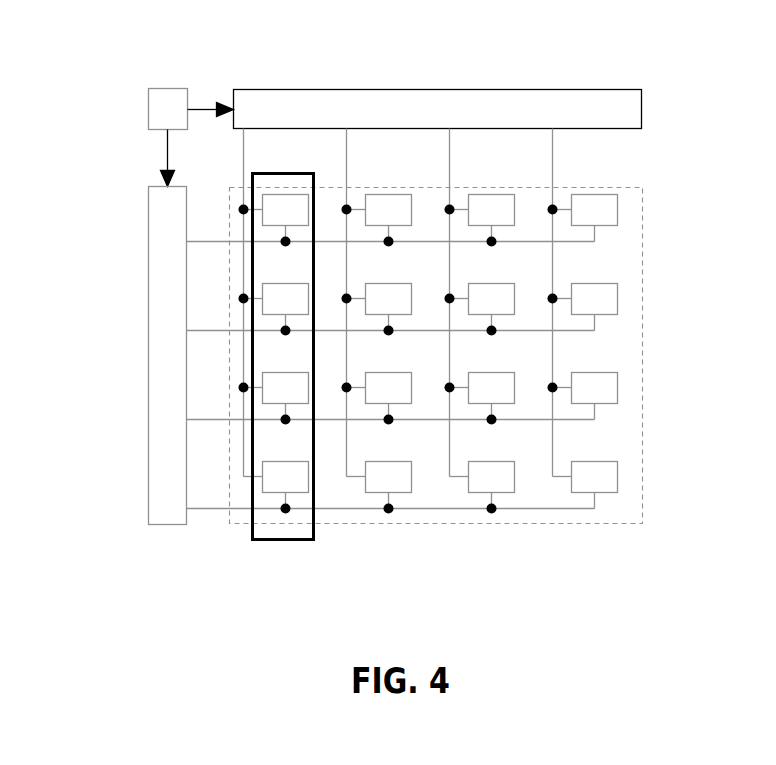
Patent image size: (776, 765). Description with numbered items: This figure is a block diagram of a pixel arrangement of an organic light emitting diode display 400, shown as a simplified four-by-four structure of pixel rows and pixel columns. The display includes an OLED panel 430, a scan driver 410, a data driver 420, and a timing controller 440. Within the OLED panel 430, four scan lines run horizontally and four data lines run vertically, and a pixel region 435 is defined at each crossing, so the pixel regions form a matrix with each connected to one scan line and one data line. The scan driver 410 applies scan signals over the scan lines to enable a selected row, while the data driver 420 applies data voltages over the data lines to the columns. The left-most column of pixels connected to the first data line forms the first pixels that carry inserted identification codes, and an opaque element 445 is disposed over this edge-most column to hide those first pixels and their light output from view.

The OLED display 400 is at (698, 20).
The scan driver 410 is at (149, 457).
The data driver 420 is at (399, 120).
The OLED panel 430 is at (451, 366).
The pixel region 435 is at (620, 207).
The timing controller 440 is at (149, 88).
The opaque element 445 is at (252, 538).